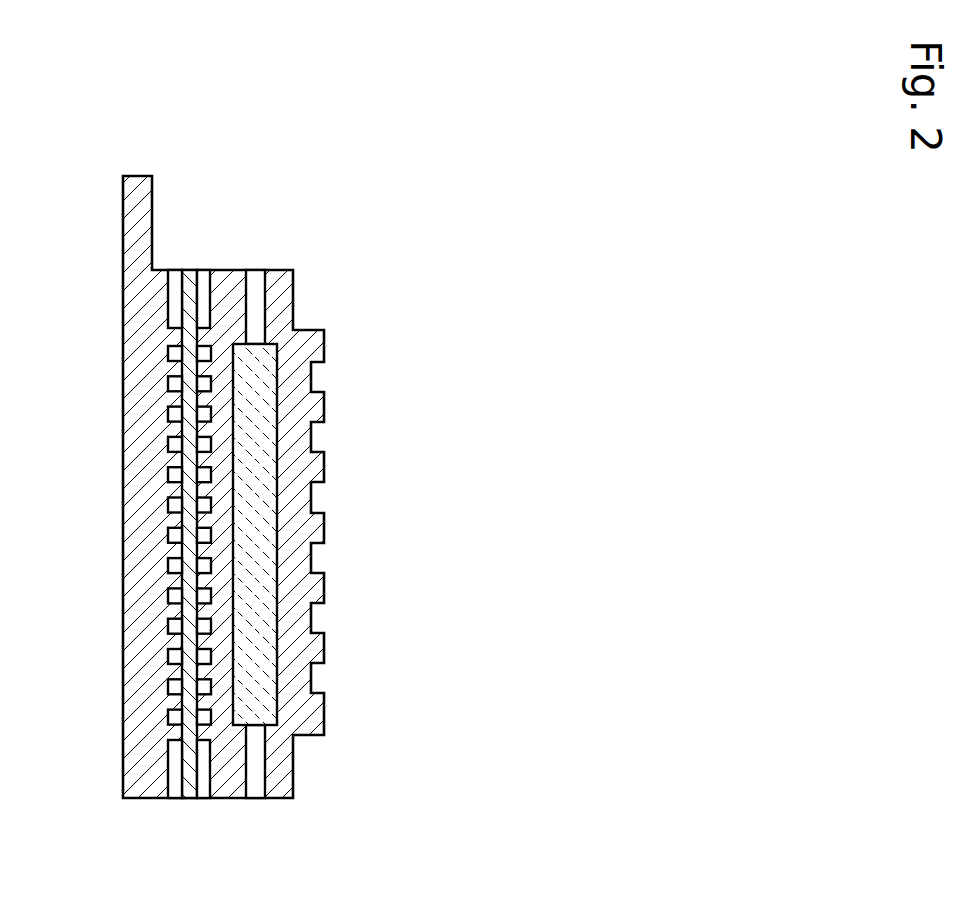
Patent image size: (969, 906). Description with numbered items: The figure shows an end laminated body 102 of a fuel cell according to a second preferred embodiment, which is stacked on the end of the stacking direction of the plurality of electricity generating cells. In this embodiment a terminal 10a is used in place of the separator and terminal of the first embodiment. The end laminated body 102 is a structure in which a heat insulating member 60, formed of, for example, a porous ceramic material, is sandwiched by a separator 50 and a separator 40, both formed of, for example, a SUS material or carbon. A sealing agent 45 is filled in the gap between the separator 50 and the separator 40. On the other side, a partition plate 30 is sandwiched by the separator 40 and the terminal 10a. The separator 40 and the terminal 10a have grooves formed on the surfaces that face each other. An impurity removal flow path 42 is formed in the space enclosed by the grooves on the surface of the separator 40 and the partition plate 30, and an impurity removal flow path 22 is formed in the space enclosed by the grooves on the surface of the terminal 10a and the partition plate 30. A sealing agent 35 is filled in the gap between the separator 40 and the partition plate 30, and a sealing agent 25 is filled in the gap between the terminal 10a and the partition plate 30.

The terminal 10a is at (133, 176).
The impurity removal flow path 22 is at (176, 353).
The sealing agent 25 is at (176, 793).
The partition plate 30 is at (188, 275).
The sealing agent 35 is at (203, 793).
The separator 40 is at (226, 275).
The impurity removal flow path 42 is at (203, 385).
The sealing agent 45 is at (254, 793).
The separator 50 is at (277, 275).
The heat insulating member 60 is at (263, 370).
The end laminated body 102 is at (263, 153).